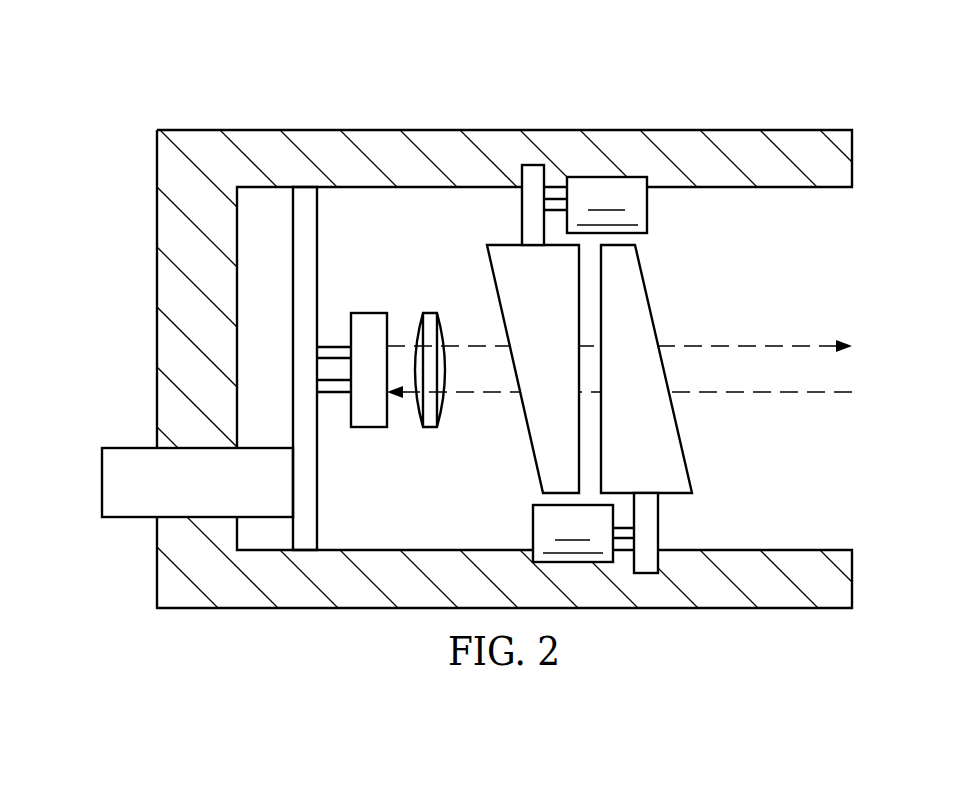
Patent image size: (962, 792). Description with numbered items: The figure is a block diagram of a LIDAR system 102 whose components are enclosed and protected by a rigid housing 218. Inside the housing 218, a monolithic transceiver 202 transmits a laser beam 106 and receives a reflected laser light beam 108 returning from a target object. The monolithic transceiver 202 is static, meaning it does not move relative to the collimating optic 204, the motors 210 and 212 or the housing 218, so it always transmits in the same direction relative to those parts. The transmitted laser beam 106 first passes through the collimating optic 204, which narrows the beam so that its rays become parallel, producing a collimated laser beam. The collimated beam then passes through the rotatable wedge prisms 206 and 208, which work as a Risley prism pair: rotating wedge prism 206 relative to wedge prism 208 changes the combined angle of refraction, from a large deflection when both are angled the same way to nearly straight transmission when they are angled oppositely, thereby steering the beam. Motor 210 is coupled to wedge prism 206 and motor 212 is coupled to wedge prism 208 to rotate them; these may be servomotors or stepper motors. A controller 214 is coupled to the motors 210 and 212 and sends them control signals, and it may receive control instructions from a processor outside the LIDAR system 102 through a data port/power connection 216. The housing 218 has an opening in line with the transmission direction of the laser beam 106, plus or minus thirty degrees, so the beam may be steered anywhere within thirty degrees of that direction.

The LIDAR system 102 is at (323, 91).
The laser beam 106 is at (768, 346).
The reflected laser light beam 108 is at (757, 392).
The monolithic transceiver 202 is at (368, 313).
The collimating optic 204 is at (426, 313).
The wedge prism 206 is at (542, 443).
The wedge prism 208 is at (646, 295).
The motor 210 is at (648, 207).
The motor 212 is at (540, 532).
The controller 214 is at (308, 471).
The data port/power connection 216 is at (108, 483).
The housing 218 is at (504, 130).